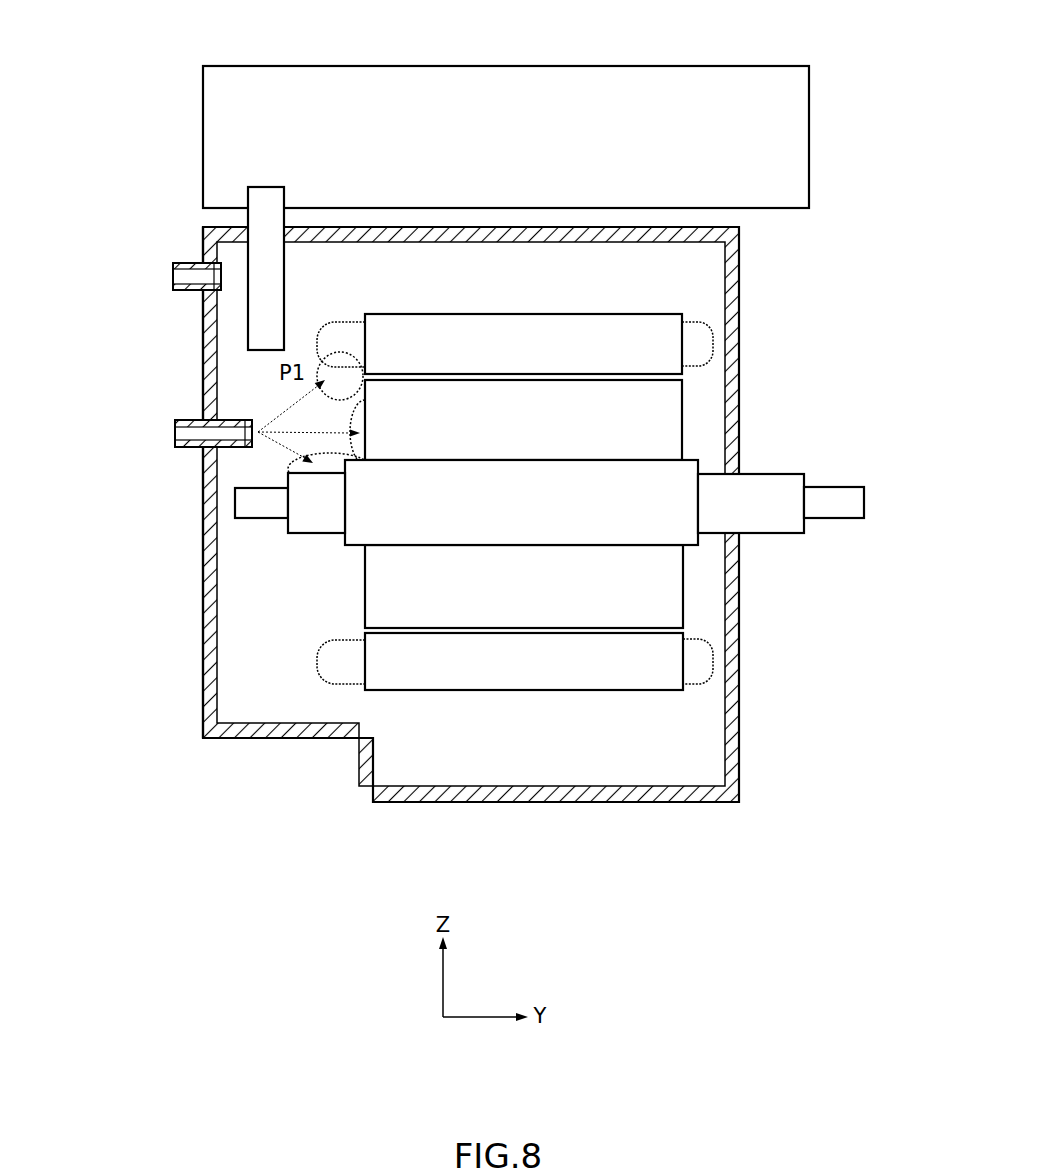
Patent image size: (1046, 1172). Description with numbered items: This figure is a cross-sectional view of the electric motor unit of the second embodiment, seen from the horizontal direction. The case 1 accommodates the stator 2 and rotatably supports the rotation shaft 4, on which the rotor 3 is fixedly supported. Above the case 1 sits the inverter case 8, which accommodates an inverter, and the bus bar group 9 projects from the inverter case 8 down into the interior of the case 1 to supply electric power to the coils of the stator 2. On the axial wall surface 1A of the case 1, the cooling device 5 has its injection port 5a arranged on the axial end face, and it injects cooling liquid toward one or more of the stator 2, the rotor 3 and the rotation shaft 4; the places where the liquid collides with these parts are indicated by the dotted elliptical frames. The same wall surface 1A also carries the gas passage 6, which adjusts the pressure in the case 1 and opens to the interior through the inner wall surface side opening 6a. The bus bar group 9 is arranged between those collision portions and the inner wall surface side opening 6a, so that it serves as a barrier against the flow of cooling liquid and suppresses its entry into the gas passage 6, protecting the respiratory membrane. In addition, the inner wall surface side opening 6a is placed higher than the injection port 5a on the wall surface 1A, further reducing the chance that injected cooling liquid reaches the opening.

The case 1 is at (360, 802).
The wall surface 1A is at (197, 570).
The stator 2 is at (683, 658).
The rotor 3 is at (683, 583).
The rotation shaft 4 is at (833, 487).
The cooling device 5 is at (185, 447).
The injection port 5a is at (256, 437).
The gas passage 6 is at (180, 291).
The inner wall surface side opening 6a is at (221, 290).
The inverter case 8 is at (732, 82).
The bus bar group 9 is at (247, 227).